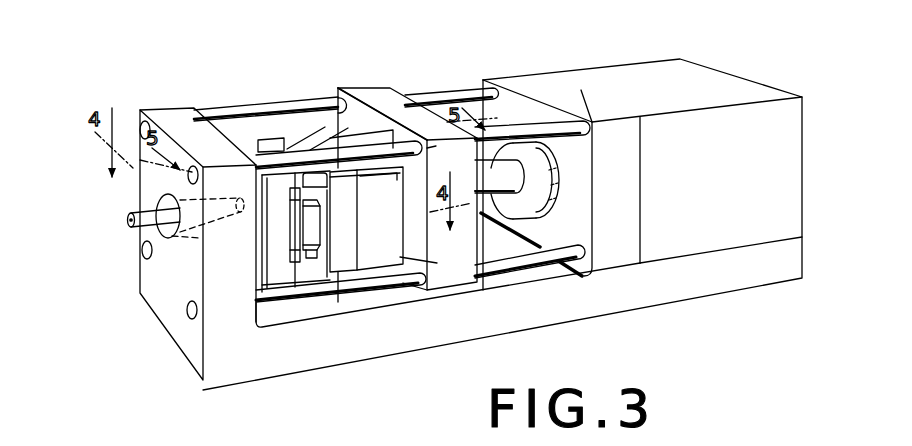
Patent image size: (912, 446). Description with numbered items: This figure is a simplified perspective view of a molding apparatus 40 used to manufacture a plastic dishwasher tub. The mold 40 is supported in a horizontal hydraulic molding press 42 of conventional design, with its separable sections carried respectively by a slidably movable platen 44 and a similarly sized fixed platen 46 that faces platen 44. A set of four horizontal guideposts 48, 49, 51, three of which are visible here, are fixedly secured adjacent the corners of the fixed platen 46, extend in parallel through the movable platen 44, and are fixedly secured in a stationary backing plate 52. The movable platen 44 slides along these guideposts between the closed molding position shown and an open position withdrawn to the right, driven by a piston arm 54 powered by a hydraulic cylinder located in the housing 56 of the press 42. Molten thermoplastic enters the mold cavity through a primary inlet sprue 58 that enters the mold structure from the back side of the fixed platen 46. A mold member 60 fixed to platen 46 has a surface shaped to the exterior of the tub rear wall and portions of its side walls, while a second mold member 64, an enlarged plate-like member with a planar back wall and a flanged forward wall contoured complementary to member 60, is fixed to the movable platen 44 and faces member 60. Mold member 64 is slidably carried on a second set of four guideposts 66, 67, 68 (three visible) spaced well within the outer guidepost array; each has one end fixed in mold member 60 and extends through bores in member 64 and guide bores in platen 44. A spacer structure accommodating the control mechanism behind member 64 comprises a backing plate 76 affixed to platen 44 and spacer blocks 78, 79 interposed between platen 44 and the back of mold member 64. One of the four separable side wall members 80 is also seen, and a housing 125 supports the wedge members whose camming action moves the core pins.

The molding apparatus 40 is at (239, 84).
The horizontal hydraulic molding press 42 is at (541, 327).
The slidably movable platen 44 is at (386, 98).
The fixed platen 46 is at (180, 110).
The horizontal guidepost 48 is at (403, 142).
The horizontal guidepost 49 is at (390, 296).
The horizontal guidepost 51 is at (316, 96).
The stationary backing plate 52 is at (527, 83).
The piston arm 54 is at (528, 209).
The housing 56 is at (650, 77).
The primary inlet sprue 58 is at (222, 214).
The mold member 60 is at (275, 284).
The second mold member 64 is at (347, 272).
The guidepost 66 is at (303, 277).
The guidepost 67 is at (330, 178).
The guidepost 68 is at (268, 147).
The backing plate 76 is at (433, 262).
The spacer block 78 is at (345, 101).
The spacer block 79 is at (443, 153).
The side wall member 80 is at (300, 206).
The housing 125 is at (300, 240).